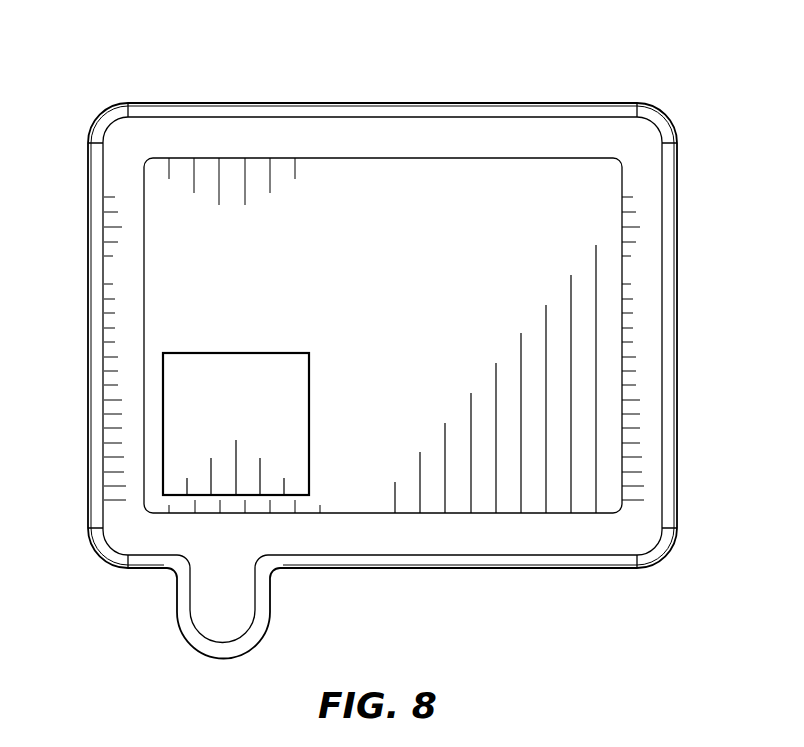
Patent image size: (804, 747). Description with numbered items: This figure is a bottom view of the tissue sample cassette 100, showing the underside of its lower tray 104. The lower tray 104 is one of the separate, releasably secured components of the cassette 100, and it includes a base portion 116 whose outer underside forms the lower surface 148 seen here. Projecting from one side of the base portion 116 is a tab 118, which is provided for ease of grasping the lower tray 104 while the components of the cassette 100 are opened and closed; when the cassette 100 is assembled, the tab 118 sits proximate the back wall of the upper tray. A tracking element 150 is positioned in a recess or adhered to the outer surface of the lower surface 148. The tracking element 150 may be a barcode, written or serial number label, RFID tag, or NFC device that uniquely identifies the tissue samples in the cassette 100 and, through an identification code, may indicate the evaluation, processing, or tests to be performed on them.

The tissue sample cassette 100 is at (103, 93).
The lower tray 104 is at (668, 480).
The base portion 116 is at (465, 531).
The tab 118 is at (237, 623).
The lower surface 148 is at (578, 357).
The tracking element 150 is at (181, 428).